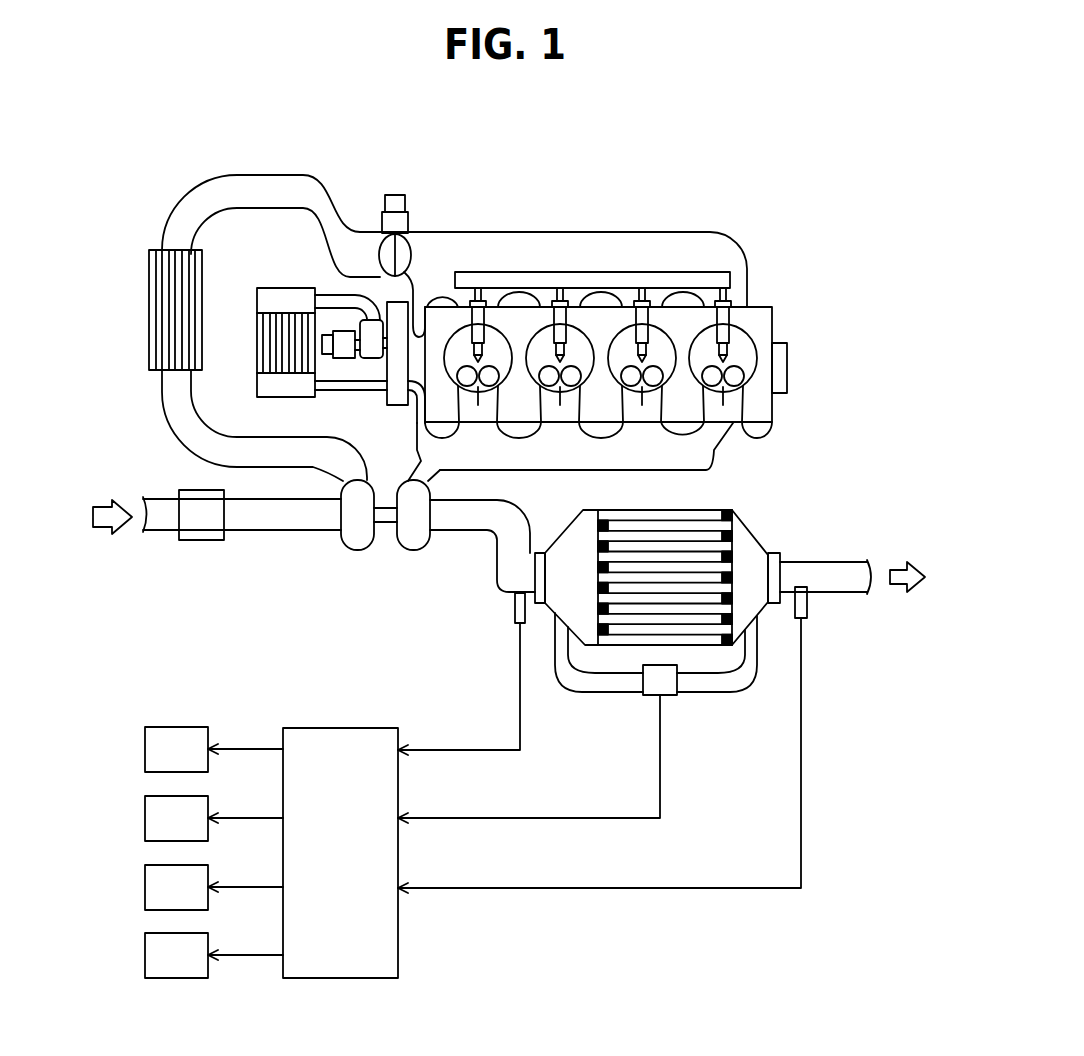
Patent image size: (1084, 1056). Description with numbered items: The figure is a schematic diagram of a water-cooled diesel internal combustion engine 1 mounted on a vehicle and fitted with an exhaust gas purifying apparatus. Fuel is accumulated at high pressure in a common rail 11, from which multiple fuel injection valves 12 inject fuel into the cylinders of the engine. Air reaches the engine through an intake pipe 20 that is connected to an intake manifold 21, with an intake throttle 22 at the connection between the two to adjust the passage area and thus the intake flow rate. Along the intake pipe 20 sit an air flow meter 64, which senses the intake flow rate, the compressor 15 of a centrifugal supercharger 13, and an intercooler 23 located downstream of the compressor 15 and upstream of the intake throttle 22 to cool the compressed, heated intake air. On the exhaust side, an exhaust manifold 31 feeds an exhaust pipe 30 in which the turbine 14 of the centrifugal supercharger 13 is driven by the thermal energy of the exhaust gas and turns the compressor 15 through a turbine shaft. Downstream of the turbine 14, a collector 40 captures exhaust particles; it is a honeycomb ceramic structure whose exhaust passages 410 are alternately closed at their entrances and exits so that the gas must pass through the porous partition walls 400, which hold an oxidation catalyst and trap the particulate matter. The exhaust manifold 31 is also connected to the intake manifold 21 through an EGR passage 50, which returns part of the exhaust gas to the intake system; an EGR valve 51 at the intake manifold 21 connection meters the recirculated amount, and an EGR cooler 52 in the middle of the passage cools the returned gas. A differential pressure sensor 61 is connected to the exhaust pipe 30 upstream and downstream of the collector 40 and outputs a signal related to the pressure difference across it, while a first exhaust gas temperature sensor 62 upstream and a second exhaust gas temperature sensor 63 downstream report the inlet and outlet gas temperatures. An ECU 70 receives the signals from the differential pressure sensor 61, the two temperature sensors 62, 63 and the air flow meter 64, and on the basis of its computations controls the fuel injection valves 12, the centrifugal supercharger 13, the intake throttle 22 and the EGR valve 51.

The internal combustion engine 1 is at (793, 331).
The common rail 11 is at (702, 276).
The fuel injection valves 12 is at (732, 318).
The centrifugal supercharger 13 is at (342, 603).
The turbine 14 is at (412, 551).
The compressor 15 is at (357, 551).
The intake pipe 20 is at (217, 186).
The intake manifold 21 is at (670, 232).
The intake throttle 22 is at (400, 253).
The intercooler 23 is at (167, 314).
The exhaust pipe 30 is at (476, 534).
The exhaust manifold 31 is at (714, 448).
The collector 40 is at (735, 557).
The porous partition walls 400 is at (645, 535).
The exhaust passages 410 is at (676, 550).
The EGR passage 50 is at (330, 294).
The EGR valve 51 is at (343, 333).
The EGR cooler 52 is at (290, 365).
The differential pressure sensor 61 is at (668, 700).
The first exhaust gas temperature sensor 62 is at (512, 612).
The second exhaust gas temperature sensor 63 is at (807, 607).
The air flow meter 64 is at (202, 541).
The ECU 70 is at (357, 728).